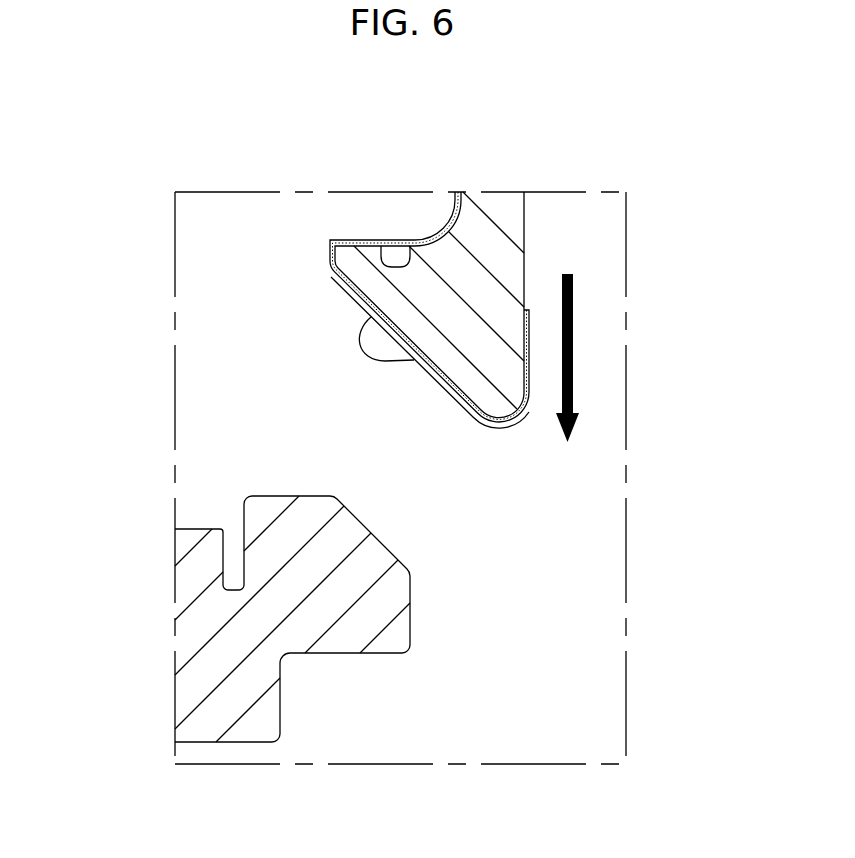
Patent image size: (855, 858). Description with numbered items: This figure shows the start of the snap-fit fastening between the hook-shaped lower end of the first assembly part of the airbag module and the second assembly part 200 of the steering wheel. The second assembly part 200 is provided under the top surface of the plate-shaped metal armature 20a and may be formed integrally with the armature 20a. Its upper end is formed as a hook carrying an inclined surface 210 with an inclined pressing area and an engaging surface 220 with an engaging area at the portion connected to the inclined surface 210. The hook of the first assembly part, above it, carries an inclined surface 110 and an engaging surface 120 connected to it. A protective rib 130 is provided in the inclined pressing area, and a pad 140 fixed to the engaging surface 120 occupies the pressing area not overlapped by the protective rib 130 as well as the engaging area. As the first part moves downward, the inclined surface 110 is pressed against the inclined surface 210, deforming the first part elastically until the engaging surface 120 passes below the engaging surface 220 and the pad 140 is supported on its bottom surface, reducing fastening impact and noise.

The inclined surface 110 is at (403, 361).
The engaging surface 120 is at (413, 245).
The protective rib 130 is at (492, 428).
The pad 140 is at (355, 295).
The armature 20a is at (193, 642).
The second assembly part 200 is at (320, 665).
The inclined surface 210 is at (380, 537).
The engaging surface 220 is at (373, 655).